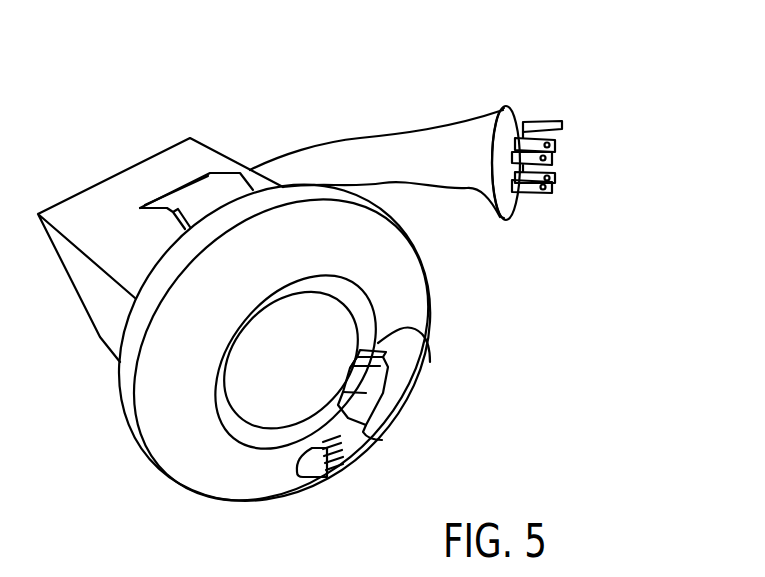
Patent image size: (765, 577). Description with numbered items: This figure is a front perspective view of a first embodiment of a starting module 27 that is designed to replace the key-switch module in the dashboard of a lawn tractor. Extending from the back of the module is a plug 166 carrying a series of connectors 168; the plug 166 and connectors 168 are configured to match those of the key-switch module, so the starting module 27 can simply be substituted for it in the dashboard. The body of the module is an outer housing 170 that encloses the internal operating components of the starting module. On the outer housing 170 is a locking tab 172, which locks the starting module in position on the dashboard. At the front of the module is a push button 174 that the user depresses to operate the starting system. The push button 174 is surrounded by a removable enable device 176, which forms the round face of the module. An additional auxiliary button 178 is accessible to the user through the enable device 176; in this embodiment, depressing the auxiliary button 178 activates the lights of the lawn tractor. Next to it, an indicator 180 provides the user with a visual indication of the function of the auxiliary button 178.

The starting module 27 is at (463, 326).
The plug 166 is at (465, 150).
The connectors 168 is at (533, 186).
The outer housing 170 is at (210, 148).
The locking tab 172 is at (193, 212).
The push button 174 is at (273, 400).
The enable device 176 is at (155, 463).
The auxiliary button 178 is at (363, 396).
The indicator 180 is at (310, 478).